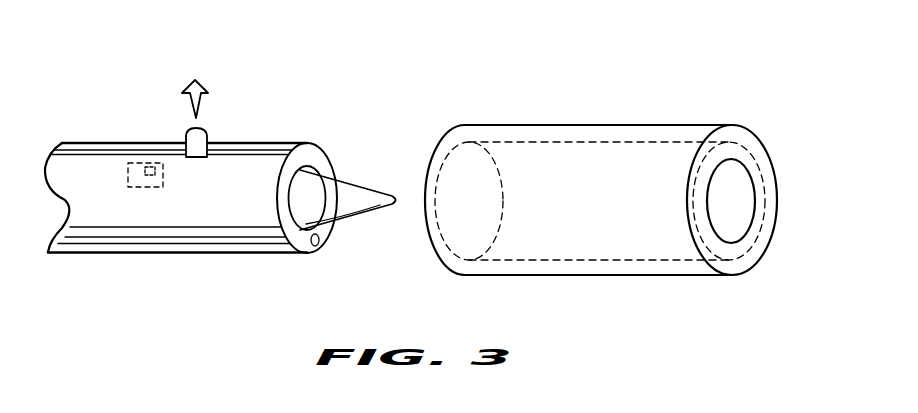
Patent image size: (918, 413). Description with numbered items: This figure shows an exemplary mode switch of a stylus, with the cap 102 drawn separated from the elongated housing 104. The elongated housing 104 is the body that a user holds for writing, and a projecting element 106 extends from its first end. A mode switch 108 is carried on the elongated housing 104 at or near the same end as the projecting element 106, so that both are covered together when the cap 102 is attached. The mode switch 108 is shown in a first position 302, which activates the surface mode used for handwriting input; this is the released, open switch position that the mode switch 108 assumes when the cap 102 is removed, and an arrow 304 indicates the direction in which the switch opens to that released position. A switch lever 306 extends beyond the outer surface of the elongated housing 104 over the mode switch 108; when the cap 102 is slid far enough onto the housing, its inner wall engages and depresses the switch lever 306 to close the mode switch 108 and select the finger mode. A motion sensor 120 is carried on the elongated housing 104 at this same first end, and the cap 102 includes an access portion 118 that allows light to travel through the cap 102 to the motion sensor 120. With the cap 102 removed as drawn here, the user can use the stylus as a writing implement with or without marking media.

The cap 102 is at (605, 125).
The elongated housing 104 is at (98, 243).
The projecting element 106 is at (352, 192).
The mode switch 108 is at (156, 181).
The access portion 118 is at (735, 203).
The motion sensor 120 is at (319, 243).
The first position 302 is at (213, 135).
The arrow 304 is at (203, 85).
The switch lever 306 is at (186, 132).